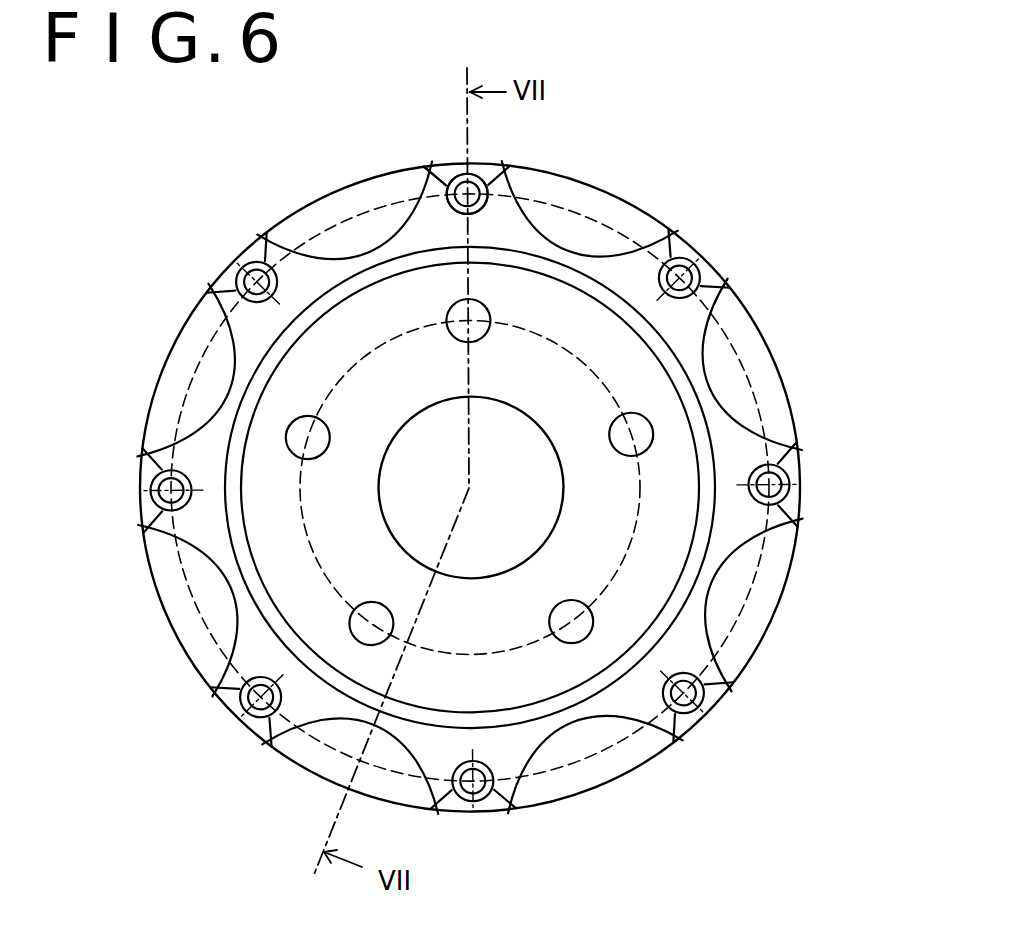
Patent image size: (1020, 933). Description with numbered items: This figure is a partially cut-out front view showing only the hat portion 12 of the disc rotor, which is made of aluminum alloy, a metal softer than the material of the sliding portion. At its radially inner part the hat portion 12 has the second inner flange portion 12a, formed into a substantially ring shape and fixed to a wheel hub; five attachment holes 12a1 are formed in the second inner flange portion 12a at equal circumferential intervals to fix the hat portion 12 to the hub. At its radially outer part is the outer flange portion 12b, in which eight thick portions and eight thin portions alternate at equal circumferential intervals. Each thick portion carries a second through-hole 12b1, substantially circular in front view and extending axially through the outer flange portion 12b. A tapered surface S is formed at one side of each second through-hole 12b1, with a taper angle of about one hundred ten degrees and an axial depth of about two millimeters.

The hat portion 12 is at (155, 373).
The second inner flange portion 12a is at (578, 493).
The attachment holes 12a1 is at (548, 618).
The outer flange portion 12b is at (802, 533).
The second through-holes 12b1 is at (490, 164).
The tapered surface S is at (445, 178).